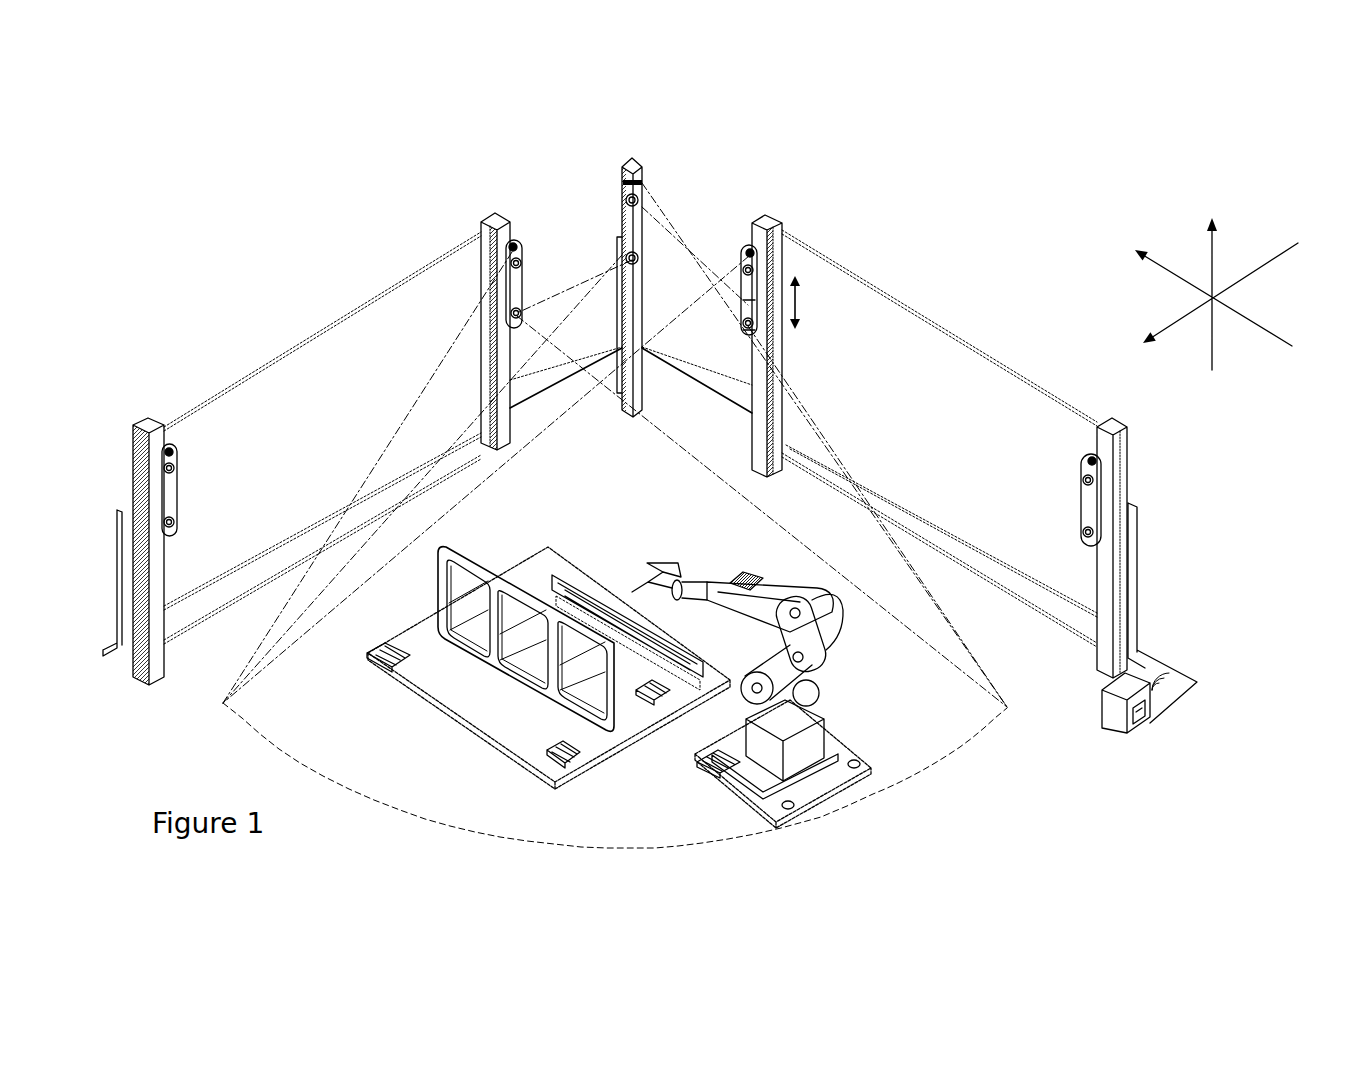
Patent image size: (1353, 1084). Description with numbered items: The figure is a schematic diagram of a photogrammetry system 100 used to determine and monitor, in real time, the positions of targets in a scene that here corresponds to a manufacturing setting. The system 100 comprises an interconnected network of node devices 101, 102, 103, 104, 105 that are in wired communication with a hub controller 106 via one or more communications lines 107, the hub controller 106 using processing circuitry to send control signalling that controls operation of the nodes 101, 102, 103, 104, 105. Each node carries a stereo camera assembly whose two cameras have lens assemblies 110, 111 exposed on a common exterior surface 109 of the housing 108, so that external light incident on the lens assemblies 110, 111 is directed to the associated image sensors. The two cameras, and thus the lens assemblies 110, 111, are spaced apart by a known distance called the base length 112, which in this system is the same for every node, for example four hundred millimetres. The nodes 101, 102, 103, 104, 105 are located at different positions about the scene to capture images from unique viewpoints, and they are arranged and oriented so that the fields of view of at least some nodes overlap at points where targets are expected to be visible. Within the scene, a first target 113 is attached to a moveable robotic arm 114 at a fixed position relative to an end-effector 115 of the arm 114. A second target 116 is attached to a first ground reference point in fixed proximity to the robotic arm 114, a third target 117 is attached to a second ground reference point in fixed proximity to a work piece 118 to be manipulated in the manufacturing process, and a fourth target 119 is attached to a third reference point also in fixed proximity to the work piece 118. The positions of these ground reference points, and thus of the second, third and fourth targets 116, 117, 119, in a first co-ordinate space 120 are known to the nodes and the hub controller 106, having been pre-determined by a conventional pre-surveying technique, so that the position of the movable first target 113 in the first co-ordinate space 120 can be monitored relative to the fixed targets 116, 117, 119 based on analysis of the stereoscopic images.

The photogrammetry system 100 is at (210, 270).
The node device 101 is at (634, 183).
The node device 102 is at (516, 248).
The node device 103 is at (750, 250).
The node device 104 is at (174, 500).
The node device 105 is at (1082, 500).
The hub controller 106 is at (1118, 724).
The communications line 107 is at (1160, 676).
The housing 108 is at (740, 316).
The exterior surface 109 is at (743, 320).
The lens assembly 110 is at (749, 270).
The lens assembly 111 is at (752, 323).
The base length 112 is at (797, 303).
The first target 113 is at (738, 576).
The robotic arm 114 is at (833, 652).
The end-effector 115 is at (658, 565).
The second target 116 is at (700, 760).
The third target 117 is at (387, 661).
The work piece 118 is at (470, 547).
The fourth target 119 is at (550, 757).
The first co-ordinate space 120 is at (1163, 230).